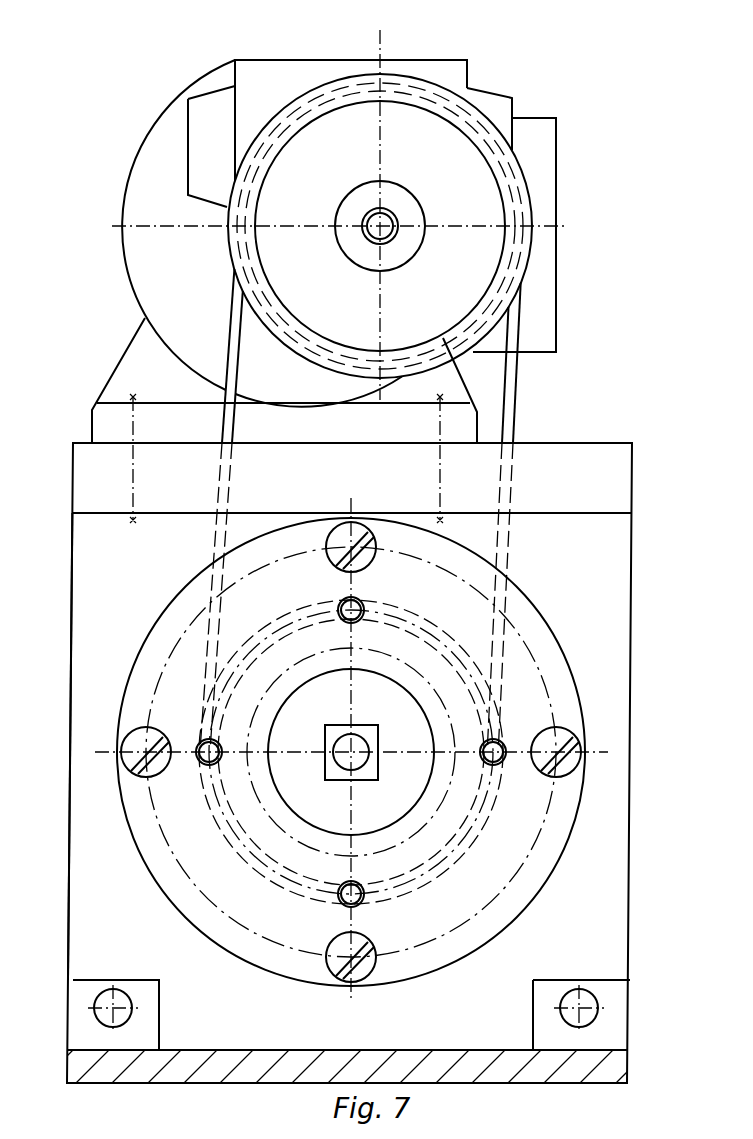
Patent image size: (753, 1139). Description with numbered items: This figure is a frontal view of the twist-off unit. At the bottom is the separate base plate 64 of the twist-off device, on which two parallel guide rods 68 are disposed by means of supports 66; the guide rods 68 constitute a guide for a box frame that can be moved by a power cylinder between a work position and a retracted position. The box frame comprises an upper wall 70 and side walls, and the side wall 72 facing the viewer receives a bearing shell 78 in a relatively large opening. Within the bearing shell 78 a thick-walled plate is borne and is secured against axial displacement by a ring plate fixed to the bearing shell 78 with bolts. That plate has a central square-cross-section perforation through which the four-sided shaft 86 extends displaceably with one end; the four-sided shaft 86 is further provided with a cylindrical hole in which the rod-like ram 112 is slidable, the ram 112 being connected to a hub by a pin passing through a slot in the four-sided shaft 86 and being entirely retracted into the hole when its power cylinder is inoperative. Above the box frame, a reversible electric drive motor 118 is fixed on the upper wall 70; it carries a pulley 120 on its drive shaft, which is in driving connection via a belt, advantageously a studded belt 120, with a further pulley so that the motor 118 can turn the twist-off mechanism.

The reversible electric drive motor 118 is at (138, 198).
The pulley / studded belt 120 is at (508, 406).
The upper wall 70 is at (597, 481).
The side wall 72 is at (100, 572).
The bearing shell 78 is at (150, 700).
The ram 112 is at (357, 757).
The four-sided shaft 86 is at (341, 776).
The guide rods 68 is at (105, 1004).
The supports 66 is at (96, 1038).
The base plate 64 is at (543, 1075).